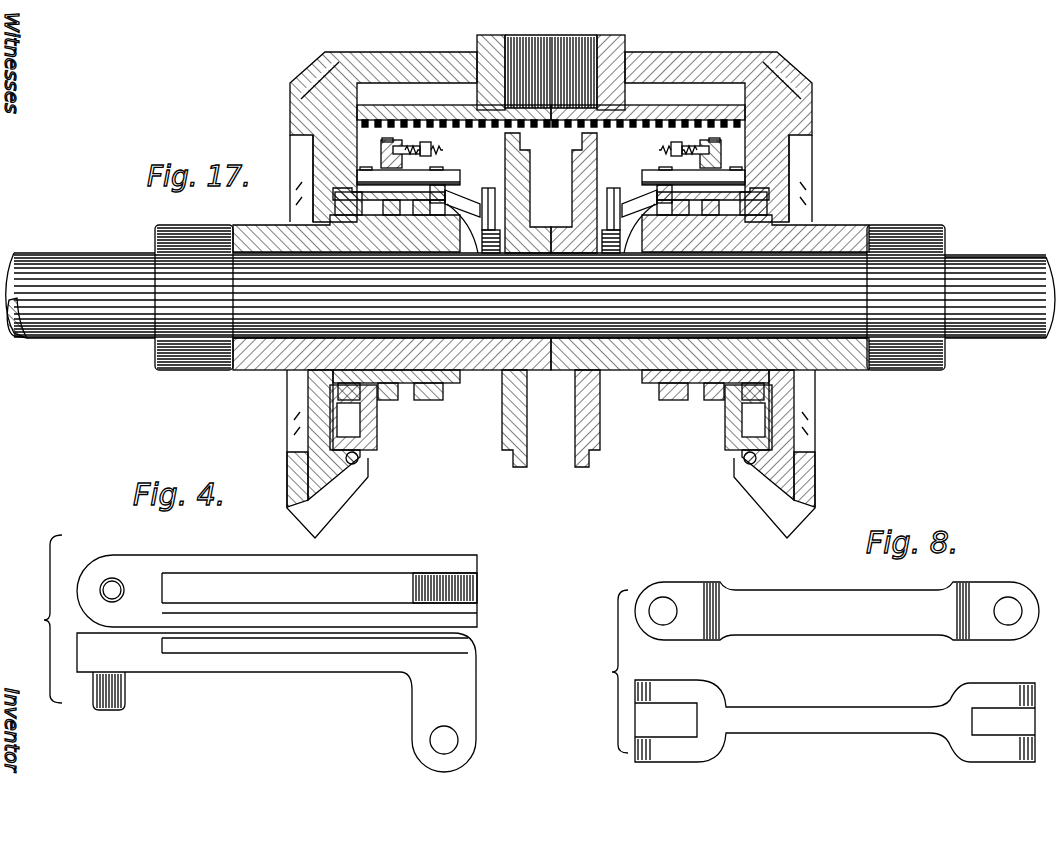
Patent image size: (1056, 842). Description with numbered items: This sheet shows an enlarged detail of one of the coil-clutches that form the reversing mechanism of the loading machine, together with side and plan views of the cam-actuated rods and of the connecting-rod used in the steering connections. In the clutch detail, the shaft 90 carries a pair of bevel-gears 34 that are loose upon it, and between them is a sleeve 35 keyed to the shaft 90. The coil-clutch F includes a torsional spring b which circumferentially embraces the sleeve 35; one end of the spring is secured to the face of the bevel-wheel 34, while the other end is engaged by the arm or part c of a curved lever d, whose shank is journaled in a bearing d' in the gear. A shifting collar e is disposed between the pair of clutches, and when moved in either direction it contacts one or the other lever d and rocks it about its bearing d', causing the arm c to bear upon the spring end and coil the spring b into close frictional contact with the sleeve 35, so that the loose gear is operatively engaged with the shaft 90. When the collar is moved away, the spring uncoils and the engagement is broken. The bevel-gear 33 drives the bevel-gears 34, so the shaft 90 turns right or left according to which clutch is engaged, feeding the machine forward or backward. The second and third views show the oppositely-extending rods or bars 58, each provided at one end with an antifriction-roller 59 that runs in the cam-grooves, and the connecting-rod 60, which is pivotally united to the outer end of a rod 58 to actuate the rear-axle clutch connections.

In FIG. 17, the bevel-gear 33 is at (757, 53).
In FIG. 17, the bevel-gears 34 is at (305, 452).
In FIG. 17, the sleeve 35 is at (458, 386).
In FIG. 17, the shaft 90 is at (1000, 333).
In FIG. 17, the coil-clutch F is at (399, 401).
In FIG. 17, the torsional spring b is at (428, 399).
In FIG. 17, the arm or part of lever c is at (457, 170).
In FIG. 17, the curved lever d is at (551, 205).
In FIG. 17, the bearing d' is at (551, 150).
In FIG. 17, the shifting collar e is at (502, 436).
In FIG. 4, the rods or bars 58 is at (470, 568).
In FIG. 4, the antifriction-roller 59 is at (114, 578).
In FIG. 8, the connecting-rod 60 is at (921, 595).